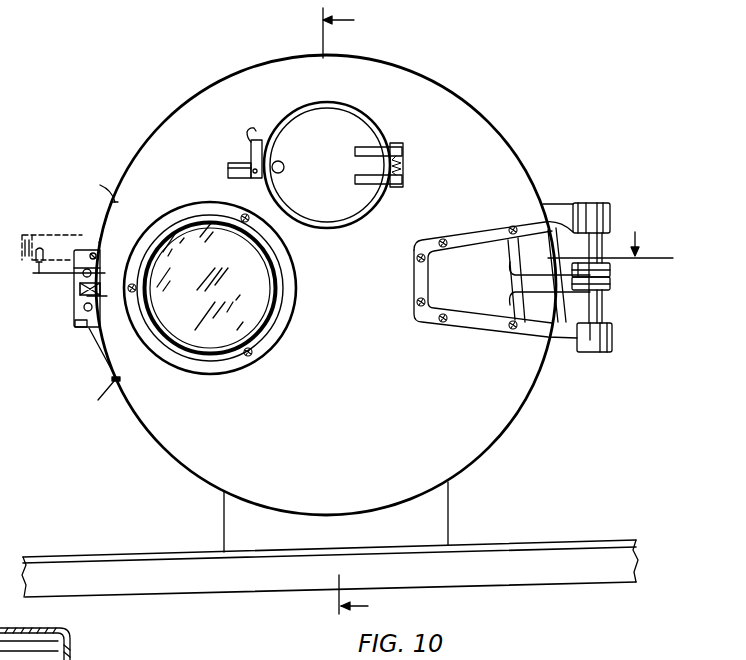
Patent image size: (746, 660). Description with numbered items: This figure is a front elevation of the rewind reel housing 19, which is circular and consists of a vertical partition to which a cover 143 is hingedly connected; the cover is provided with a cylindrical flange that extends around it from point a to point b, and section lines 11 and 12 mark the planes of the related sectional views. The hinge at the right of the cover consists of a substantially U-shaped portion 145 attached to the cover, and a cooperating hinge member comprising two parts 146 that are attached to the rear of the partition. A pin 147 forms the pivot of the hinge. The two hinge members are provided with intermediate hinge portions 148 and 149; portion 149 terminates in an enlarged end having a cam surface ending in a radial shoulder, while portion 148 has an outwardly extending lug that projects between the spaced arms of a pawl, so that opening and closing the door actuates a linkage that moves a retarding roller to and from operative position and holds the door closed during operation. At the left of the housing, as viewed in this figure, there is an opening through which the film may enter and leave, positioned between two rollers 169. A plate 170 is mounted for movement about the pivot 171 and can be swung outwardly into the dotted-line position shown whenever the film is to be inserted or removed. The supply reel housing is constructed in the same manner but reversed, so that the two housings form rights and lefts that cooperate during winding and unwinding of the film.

The section line 11 is at (610, 244).
The section line 12 is at (357, 313).
The rewind reel housing 19 is at (556, 387).
The cover 143 is at (321, 285).
The U-shaped hinge portion 145 is at (493, 245).
The hinge member parts 146 is at (560, 203).
The pin 147 is at (603, 313).
The intermediate hinge portion 148 is at (612, 270).
The intermediate hinge portion 149 is at (612, 287).
The rollers 169 is at (78, 313).
The plate 170 is at (78, 289).
The pivot 171 is at (78, 250).